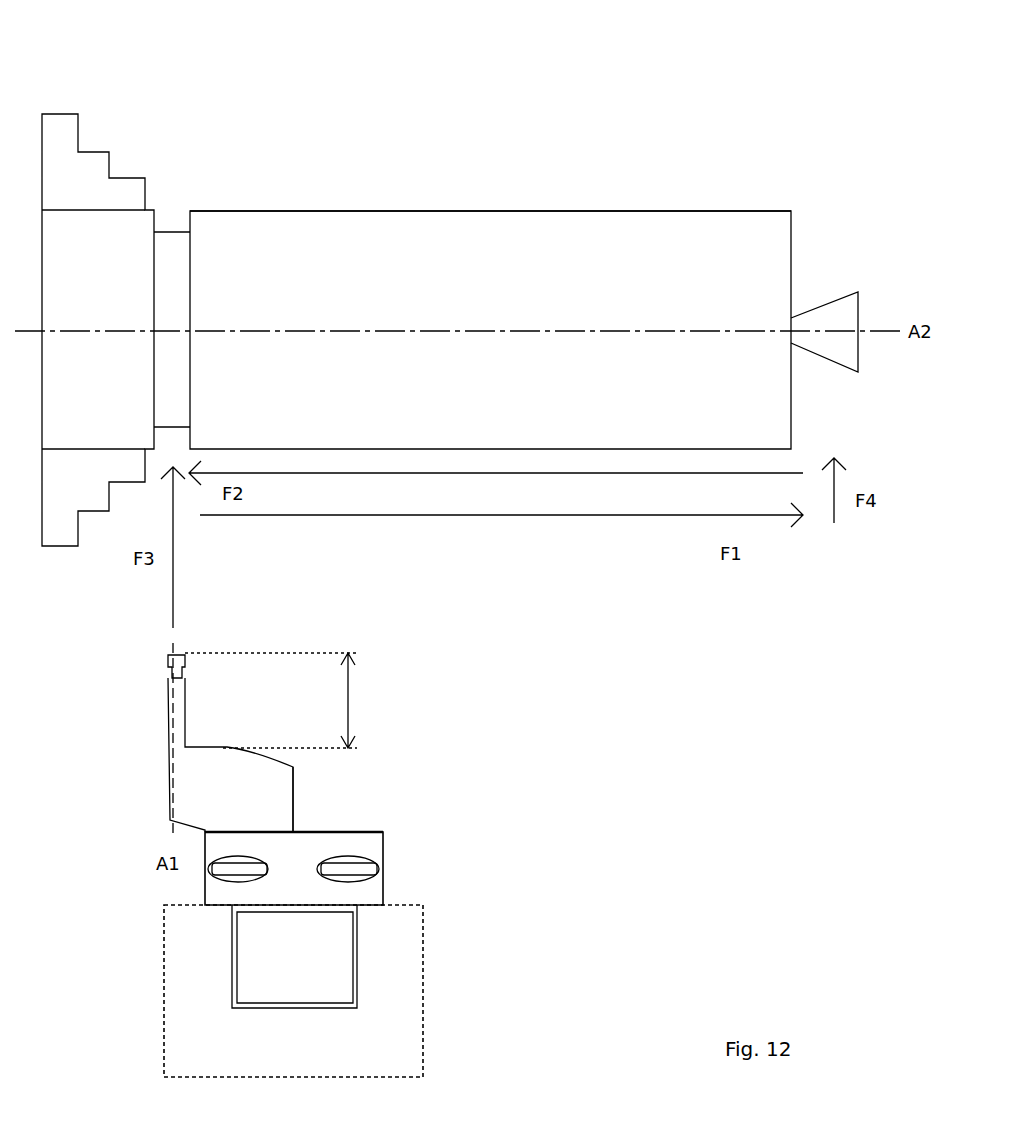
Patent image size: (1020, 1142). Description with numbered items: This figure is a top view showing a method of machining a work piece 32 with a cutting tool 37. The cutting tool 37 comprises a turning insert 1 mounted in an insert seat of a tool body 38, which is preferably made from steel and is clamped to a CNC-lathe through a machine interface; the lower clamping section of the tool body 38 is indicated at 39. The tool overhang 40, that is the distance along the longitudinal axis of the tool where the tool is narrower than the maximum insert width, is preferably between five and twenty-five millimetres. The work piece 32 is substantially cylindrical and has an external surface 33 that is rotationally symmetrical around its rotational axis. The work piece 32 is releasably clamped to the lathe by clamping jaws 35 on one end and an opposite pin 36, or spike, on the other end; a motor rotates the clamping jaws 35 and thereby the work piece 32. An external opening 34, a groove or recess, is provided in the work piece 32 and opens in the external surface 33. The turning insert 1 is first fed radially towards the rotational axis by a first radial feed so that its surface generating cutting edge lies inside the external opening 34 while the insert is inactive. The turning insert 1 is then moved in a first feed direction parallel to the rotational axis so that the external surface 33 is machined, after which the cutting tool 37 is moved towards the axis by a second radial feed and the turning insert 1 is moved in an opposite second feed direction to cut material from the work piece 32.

The turning insert 1 is at (168, 662).
The work piece 32 is at (557, 233).
The external surface 33 is at (442, 212).
The external opening 34 is at (168, 228).
The clamping jaws 35 is at (89, 167).
The pin 36 is at (835, 312).
The cutting tool 37 is at (128, 793).
The tool body 38 is at (273, 805).
The clamping section 39 is at (423, 968).
The tool overhang 40 is at (291, 700).